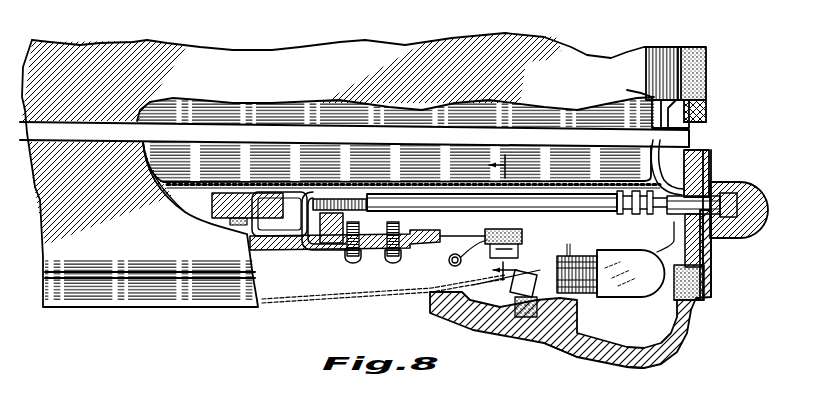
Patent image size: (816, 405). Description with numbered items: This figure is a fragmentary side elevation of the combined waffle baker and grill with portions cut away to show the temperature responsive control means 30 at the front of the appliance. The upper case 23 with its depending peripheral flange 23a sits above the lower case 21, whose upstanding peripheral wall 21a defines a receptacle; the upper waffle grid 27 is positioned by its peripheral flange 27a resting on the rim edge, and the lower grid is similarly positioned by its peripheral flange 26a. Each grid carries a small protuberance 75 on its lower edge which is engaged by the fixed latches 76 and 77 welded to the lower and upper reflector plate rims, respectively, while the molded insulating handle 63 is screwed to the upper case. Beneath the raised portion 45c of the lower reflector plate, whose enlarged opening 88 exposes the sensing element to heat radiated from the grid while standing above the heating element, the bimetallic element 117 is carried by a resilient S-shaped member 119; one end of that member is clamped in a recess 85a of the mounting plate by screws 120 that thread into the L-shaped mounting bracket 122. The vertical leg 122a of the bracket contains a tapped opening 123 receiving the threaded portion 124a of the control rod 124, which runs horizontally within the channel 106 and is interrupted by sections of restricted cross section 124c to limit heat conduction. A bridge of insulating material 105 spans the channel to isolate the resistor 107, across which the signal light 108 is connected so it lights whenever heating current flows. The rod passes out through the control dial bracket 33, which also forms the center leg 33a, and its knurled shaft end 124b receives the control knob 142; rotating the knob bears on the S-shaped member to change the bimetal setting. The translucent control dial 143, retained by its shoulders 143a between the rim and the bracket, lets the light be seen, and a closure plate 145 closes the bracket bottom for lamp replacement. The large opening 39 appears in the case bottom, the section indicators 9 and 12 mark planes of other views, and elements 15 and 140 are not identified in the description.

The upper case 23 is at (80, 45).
The depending peripheral flange 23a is at (704, 121).
The lower case 21 is at (107, 313).
The upstanding peripheral wall portion 21a is at (710, 172).
The peripheral flange 26a is at (691, 140).
The waffle grid 27 is at (579, 123).
The peripheral flange 27a is at (512, 130).
The channel 106 is at (536, 147).
The protuberance 75 is at (657, 93).
The handle 63 is at (707, 73).
The fixed latch 77 is at (706, 107).
The fixed latch 76 is at (711, 153).
The control knob 142 is at (760, 190).
The shaft end 124b is at (730, 237).
The sections of restricted cross section 124c is at (650, 222).
The control rod 124 is at (476, 213).
The threaded portion 124a is at (362, 200).
The control dial 143 is at (711, 262).
The shoulders 143a is at (672, 301).
The control dial bracket 33 is at (690, 343).
The center leg 33a is at (644, 368).
The closure plate 145 is at (578, 353).
The signal light 108 is at (633, 290).
The switch block 12 is at (510, 292).
The section line 9 is at (501, 215).
The opening 39 is at (440, 300).
The resistor 107 is at (432, 263).
The bridge of insulating material 105 is at (527, 237).
The raised portion 45c is at (435, 197).
The L-shaped control rod mounting bracket 122 is at (404, 274).
The screws 120 is at (352, 262).
The leg portion 122a is at (312, 198).
The tapped opening 123 is at (335, 197).
The recess 85a is at (298, 257).
The resilient S-shaped member 119 is at (303, 250).
The temperature responsive control means 30 is at (265, 253).
The filler block 140 is at (235, 216).
The bimetallic element 117 is at (189, 190).
The enlarged opening 88 is at (168, 184).
The forearm lower liner 15 is at (644, 173).